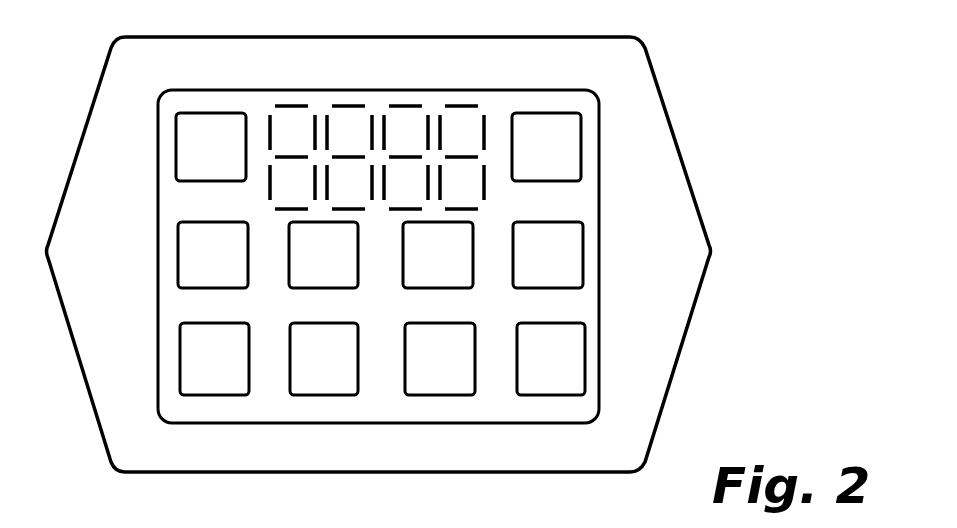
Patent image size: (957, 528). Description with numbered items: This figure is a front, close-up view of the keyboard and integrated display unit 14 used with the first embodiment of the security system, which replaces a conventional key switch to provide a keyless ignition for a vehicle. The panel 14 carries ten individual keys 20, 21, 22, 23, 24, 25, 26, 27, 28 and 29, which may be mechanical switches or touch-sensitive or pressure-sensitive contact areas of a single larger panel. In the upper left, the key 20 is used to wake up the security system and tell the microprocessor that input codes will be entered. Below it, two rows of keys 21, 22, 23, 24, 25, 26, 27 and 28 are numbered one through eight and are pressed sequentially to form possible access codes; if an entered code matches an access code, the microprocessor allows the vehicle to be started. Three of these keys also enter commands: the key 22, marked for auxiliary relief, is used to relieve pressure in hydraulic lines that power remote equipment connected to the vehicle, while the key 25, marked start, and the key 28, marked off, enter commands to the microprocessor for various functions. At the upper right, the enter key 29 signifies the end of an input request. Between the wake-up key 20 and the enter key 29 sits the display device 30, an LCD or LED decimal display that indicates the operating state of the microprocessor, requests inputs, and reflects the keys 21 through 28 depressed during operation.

The keyboard/display panel 14 is at (82, 137).
The key 20 is at (190, 112).
The key 21 is at (178, 257).
The key 22 is at (297, 289).
The key 23 is at (450, 288).
The key 24 is at (583, 241).
The key 25 is at (180, 363).
The key 26 is at (315, 395).
The key 27 is at (438, 395).
The key 28 is at (555, 395).
The enter key 29 is at (583, 123).
The display device 30 is at (487, 97).